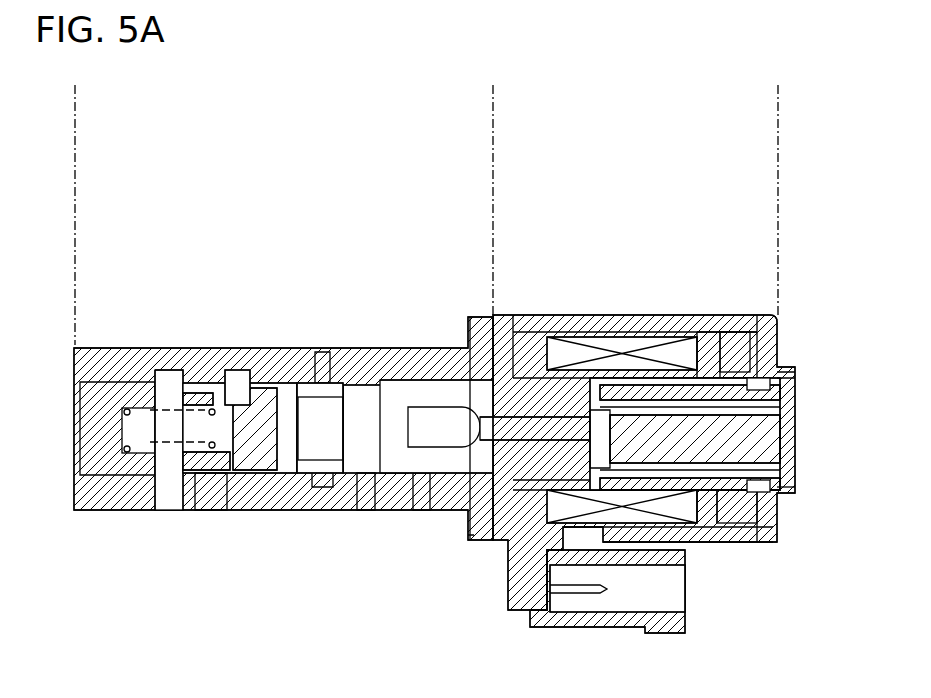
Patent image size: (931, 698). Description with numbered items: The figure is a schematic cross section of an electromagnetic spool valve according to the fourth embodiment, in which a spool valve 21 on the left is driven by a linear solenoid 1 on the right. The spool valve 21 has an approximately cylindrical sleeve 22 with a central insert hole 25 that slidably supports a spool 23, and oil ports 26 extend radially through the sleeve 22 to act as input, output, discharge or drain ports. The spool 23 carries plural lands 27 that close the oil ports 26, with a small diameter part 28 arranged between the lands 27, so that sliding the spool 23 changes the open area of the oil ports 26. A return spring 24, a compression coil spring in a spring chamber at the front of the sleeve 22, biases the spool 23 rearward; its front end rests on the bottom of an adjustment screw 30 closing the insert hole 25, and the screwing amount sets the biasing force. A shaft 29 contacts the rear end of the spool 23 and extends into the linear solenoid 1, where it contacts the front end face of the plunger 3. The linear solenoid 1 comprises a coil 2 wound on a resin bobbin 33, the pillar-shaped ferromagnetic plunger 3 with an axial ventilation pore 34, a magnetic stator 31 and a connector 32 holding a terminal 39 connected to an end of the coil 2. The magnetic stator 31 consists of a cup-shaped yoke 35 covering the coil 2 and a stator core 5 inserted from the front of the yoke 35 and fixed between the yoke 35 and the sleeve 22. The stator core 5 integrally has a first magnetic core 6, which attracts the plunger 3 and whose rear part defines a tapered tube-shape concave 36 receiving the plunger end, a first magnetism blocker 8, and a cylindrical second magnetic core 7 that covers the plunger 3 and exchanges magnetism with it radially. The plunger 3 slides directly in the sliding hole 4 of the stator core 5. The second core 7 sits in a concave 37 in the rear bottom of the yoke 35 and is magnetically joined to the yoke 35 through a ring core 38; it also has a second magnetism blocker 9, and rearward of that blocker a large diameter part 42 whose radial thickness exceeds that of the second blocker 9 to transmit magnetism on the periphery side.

The linear solenoid 1 is at (498, 112).
The spool valve 21 is at (476, 118).
The sleeve 22 is at (118, 362).
The spool 23 is at (435, 425).
The return spring 24 is at (185, 497).
The insert hole 25 is at (187, 390).
The oil port 26 is at (322, 360).
The land 27 is at (376, 403).
The small diameter part 28 is at (327, 440).
The shaft 29 is at (470, 510).
The adjustment screw 30 is at (97, 442).
The coil 2 is at (678, 510).
The plunger 3 is at (758, 443).
The sliding hole 4 is at (712, 397).
The stator core 5 is at (663, 265).
The first magnetic core 6 is at (590, 390).
The second magnetic core 7 is at (677, 383).
The first magnetism blocker 8 is at (640, 397).
The second magnetism blocker 9 is at (762, 383).
The magnetic stator 31 is at (602, 205).
The connector 32 is at (704, 642).
The resin bobbin 33 is at (683, 527).
The ventilation pore 34 is at (770, 407).
The yoke 35 is at (763, 330).
The tube-shape concave 36 is at (508, 587).
The concave 37 is at (780, 477).
The ring core 38 is at (733, 343).
The terminal 39 is at (583, 595).
The large diameter part 42 is at (768, 380).